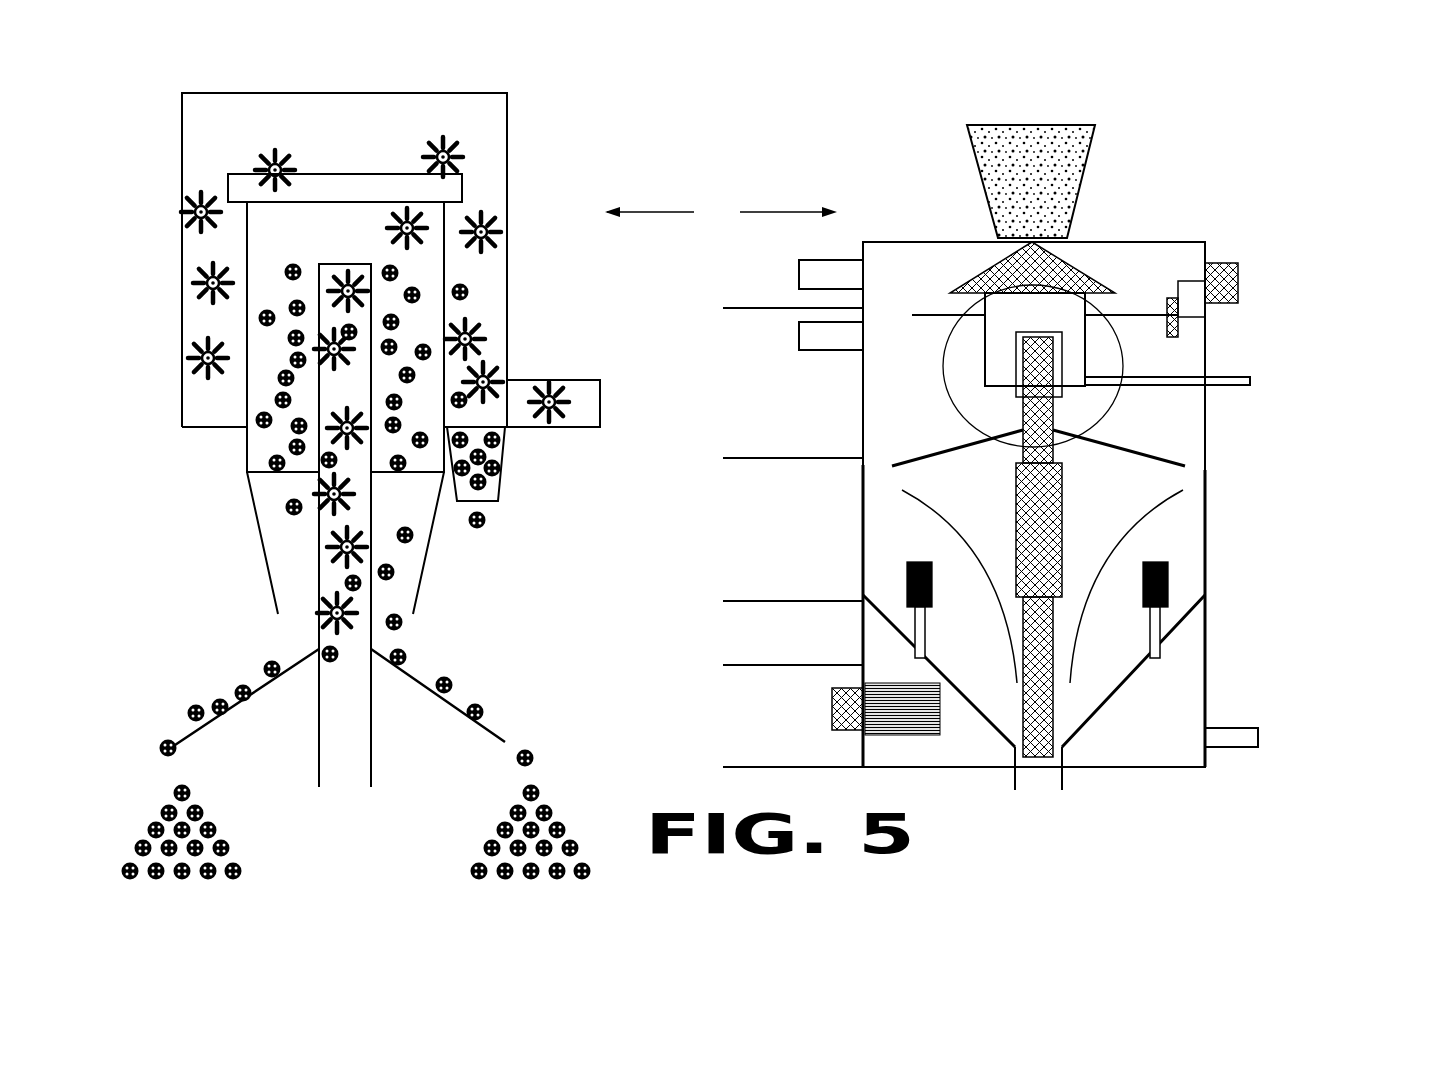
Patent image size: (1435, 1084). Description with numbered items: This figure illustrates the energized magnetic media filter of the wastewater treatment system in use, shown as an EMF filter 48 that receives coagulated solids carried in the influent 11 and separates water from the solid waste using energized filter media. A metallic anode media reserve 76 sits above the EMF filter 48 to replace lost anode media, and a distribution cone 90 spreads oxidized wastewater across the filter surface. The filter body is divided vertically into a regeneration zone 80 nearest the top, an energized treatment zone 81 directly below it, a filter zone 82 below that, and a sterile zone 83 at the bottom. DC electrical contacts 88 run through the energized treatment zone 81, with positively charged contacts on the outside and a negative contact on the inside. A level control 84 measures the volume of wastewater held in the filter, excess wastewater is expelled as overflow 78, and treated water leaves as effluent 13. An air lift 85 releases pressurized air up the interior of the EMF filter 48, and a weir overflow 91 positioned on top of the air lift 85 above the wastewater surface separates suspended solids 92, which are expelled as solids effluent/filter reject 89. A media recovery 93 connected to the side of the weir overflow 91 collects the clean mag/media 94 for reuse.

The influent 11 is at (787, 336).
The effluent 13 is at (1265, 738).
The EMF filter 48 is at (1185, 180).
The metallic anode media reserve 76 is at (977, 156).
The overflow 78 is at (835, 275).
The regeneration zone 80 is at (793, 458).
The energized treatment zone 81 is at (774, 601).
The filter zone 82 is at (787, 665).
The sterile zone 83 is at (780, 767).
The level control 84 is at (1230, 282).
The air lift 85 is at (347, 755).
The DC electrical contacts 88 is at (1062, 533).
The solids effluent/filter reject 89 is at (575, 402).
The distribution cone 90 is at (1078, 273).
The weir overflow 91 is at (228, 186).
The suspended solids 92 is at (452, 155).
The media recovery 93 is at (493, 490).
The clean mag/media 94 is at (524, 748).